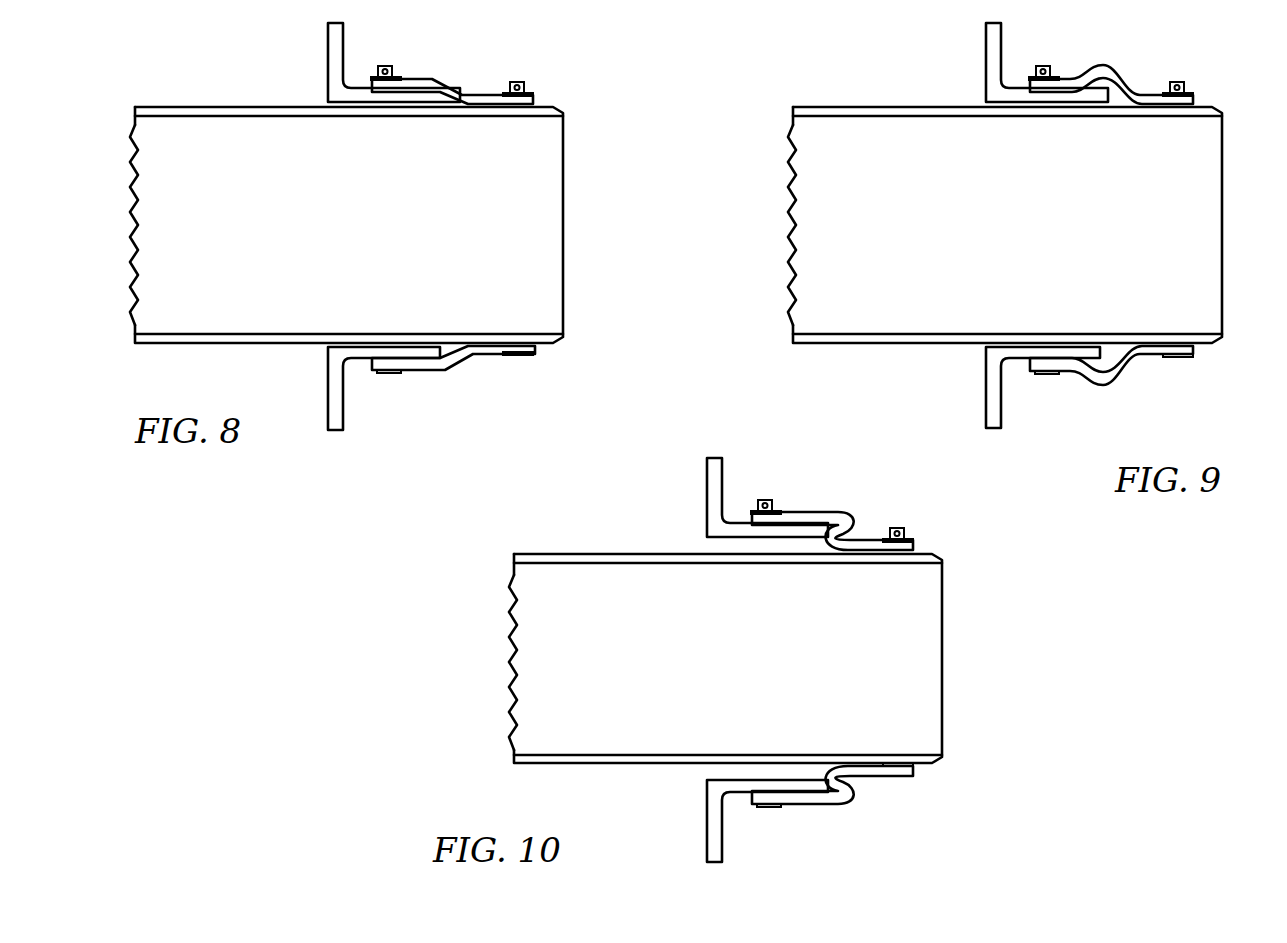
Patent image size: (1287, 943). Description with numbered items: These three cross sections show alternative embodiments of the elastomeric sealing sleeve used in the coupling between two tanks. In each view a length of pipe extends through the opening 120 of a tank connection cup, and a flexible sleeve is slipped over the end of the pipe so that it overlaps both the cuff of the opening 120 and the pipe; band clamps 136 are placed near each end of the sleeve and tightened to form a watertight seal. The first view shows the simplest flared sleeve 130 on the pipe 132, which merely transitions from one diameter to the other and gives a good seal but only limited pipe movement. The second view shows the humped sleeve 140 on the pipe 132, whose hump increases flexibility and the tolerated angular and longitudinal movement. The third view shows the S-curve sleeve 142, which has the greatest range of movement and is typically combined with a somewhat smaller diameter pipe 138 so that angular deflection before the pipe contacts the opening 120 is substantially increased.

In FIG. 8, the opening 120 is at (362, 362).
In FIG. 9, the opening 120 is at (1022, 362).
In FIG. 10, the opening 120 is at (745, 795).
In FIG. 8, the sleeve 130 is at (447, 365).
In FIG. 8, the pipe 132 is at (232, 106).
In FIG. 9, the pipe 132 is at (887, 107).
In FIG. 8, the band clamp 136 is at (392, 70).
In FIG. 9, the band clamp 136 is at (1052, 72).
In FIG. 10, the band clamp 136 is at (772, 503).
In FIG. 10, the smaller diameter pipe 138 is at (633, 553).
In FIG. 9, the humped sleeve 140 is at (1132, 390).
In FIG. 10, the S-curve sleeve 142 is at (843, 807).